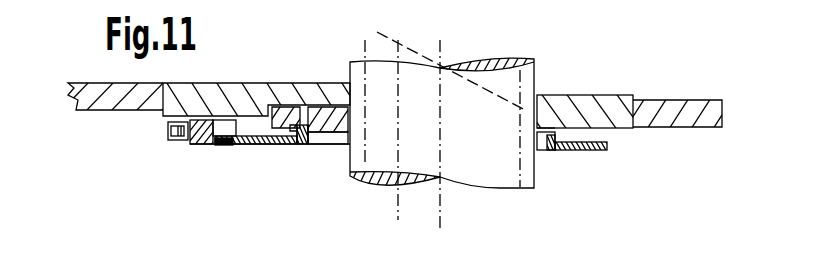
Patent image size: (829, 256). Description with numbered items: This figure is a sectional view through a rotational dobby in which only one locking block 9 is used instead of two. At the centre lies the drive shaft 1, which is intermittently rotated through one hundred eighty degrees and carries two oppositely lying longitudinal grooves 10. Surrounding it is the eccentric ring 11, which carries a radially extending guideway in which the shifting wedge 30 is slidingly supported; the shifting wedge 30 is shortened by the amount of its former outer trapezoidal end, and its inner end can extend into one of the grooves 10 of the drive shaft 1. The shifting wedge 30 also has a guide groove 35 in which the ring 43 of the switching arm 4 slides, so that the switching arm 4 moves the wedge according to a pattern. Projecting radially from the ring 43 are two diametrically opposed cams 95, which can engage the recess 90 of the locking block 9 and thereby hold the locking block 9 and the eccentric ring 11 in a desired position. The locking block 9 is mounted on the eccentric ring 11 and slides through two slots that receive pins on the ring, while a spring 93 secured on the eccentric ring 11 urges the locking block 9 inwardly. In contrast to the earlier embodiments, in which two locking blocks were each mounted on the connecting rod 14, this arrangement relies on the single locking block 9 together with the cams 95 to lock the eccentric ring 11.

The drive shaft 1 is at (485, 172).
The switching arm 4 is at (285, 145).
The locking block 9 is at (195, 143).
The longitudinal grooves 10 is at (441, 57).
The eccentric ring 11 is at (269, 93).
The connecting rod 14 is at (95, 100).
The shifting wedge 30 is at (335, 146).
The guide groove 35 is at (308, 110).
The ring 43 is at (302, 146).
The recess 90 is at (225, 128).
The spring 93 is at (175, 130).
The cams 95 is at (250, 144).